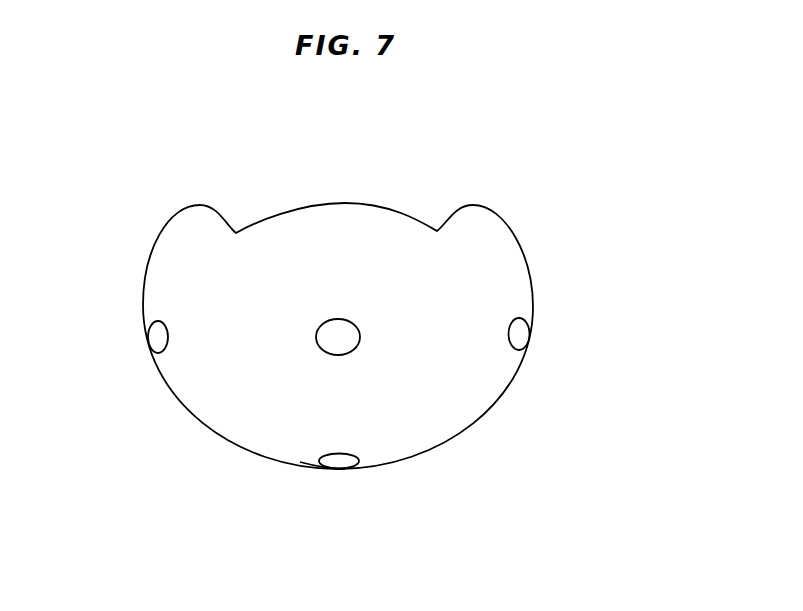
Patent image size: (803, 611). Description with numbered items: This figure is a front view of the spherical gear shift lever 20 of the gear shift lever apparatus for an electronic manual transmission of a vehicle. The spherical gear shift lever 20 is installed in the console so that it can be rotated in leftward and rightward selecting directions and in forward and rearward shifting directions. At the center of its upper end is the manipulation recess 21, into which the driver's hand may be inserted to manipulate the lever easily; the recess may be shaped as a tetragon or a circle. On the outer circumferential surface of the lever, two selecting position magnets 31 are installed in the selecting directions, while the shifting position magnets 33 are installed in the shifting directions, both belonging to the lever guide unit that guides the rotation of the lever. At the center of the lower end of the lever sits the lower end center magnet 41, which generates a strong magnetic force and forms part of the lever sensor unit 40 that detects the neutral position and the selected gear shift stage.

The spherical gear shift lever 20 is at (401, 286).
The manipulation recess 21 is at (365, 205).
The selecting position magnets 31 is at (158, 333).
The shifting position magnets 33 is at (340, 335).
The lever sensor unit 40 is at (320, 468).
The lower end center magnet 41 is at (345, 460).